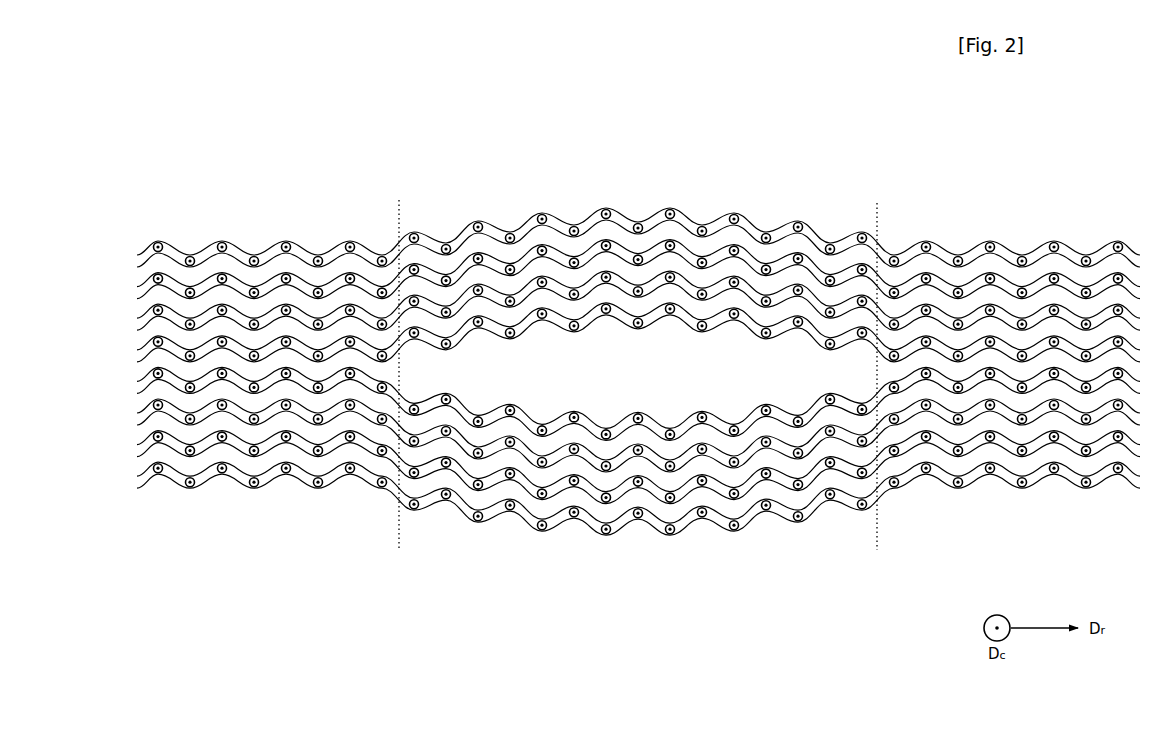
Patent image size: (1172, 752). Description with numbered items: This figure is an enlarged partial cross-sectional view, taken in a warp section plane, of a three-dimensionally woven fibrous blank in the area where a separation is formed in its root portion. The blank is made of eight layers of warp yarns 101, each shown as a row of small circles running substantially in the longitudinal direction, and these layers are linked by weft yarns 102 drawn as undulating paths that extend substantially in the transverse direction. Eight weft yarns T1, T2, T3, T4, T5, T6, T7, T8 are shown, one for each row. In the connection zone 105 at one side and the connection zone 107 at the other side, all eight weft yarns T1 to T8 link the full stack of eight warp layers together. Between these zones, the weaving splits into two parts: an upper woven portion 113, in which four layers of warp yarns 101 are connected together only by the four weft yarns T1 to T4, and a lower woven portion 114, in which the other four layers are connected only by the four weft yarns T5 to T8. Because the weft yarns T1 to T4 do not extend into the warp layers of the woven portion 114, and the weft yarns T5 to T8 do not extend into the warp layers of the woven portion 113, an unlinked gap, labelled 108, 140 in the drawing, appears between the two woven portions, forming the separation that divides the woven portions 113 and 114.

The warp yarns 101 is at (354, 243).
The weft yarns 102 is at (211, 270).
The connection zone 105 is at (251, 374).
The connection zone 107 is at (1051, 419).
The gap / channel 108 is at (624, 382).
The woven portion 113 is at (608, 260).
The woven portion 114 is at (604, 487).
The channel 140 is at (691, 382).
The weft yarn T1 is at (619, 239).
The weft yarn T2 is at (619, 237).
The weft yarn T3 is at (137, 323).
The weft yarn T4 is at (137, 355).
The weft yarn T5 is at (619, 480).
The weft yarn T6 is at (619, 496).
The weft yarn T7 is at (619, 512).
The weft yarn T8 is at (137, 481).